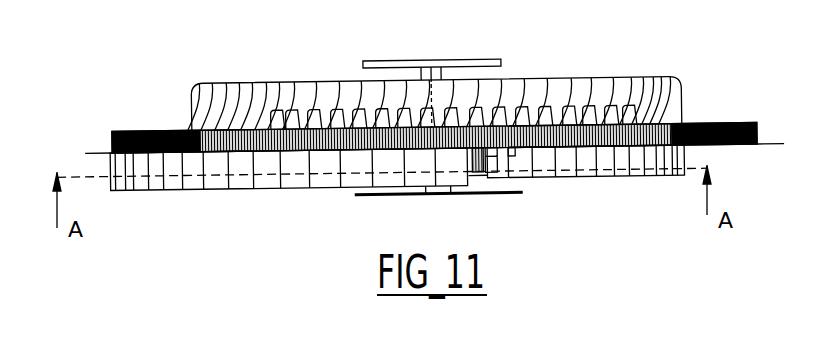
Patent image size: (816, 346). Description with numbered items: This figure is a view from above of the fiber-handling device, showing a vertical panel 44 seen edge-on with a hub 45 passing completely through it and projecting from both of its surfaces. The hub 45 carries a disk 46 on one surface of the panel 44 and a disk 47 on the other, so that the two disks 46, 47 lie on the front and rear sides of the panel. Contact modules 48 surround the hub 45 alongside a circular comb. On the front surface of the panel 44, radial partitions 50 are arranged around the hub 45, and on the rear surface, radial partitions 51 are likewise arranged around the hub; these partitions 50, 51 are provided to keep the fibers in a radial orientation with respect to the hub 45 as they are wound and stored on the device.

The vertical panel 44 is at (97, 154).
The hub 45 is at (446, 75).
The disk 46 is at (385, 196).
The disk 47 is at (472, 60).
The contact modules 48 is at (490, 163).
The radial partitions 50 is at (602, 168).
The radial partitions 51 is at (616, 100).